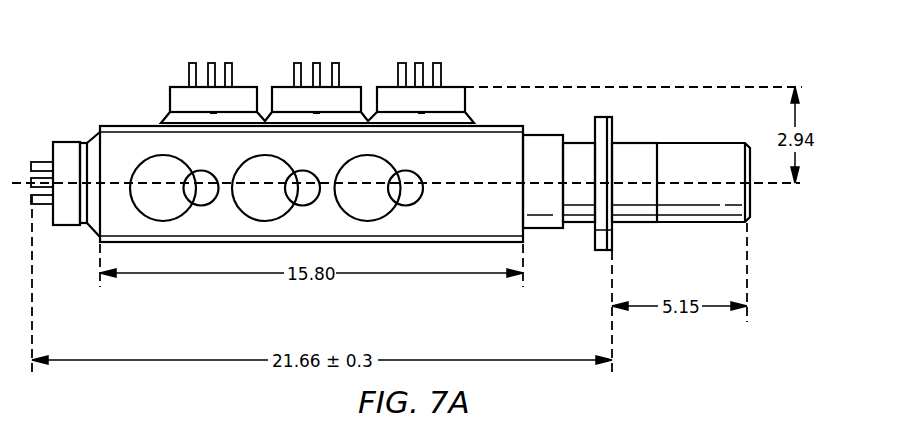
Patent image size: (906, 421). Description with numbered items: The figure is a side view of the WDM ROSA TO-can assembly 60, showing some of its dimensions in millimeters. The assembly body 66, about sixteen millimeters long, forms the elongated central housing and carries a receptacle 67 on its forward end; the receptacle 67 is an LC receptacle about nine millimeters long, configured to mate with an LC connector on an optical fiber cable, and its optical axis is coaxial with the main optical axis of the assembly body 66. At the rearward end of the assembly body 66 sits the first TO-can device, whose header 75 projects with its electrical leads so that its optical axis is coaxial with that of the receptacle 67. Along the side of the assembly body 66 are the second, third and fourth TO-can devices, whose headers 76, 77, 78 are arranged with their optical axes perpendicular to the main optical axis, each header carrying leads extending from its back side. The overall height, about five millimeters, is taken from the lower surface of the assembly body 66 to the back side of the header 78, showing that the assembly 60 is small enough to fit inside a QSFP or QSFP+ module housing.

The WDM ROSA TO-can assembly 60 is at (93, 17).
The assembly body 66 is at (132, 124).
The receptacle 67 is at (643, 152).
The header 75 is at (70, 150).
The header 76 is at (181, 94).
The header 77 is at (350, 95).
The header 78 is at (448, 98).